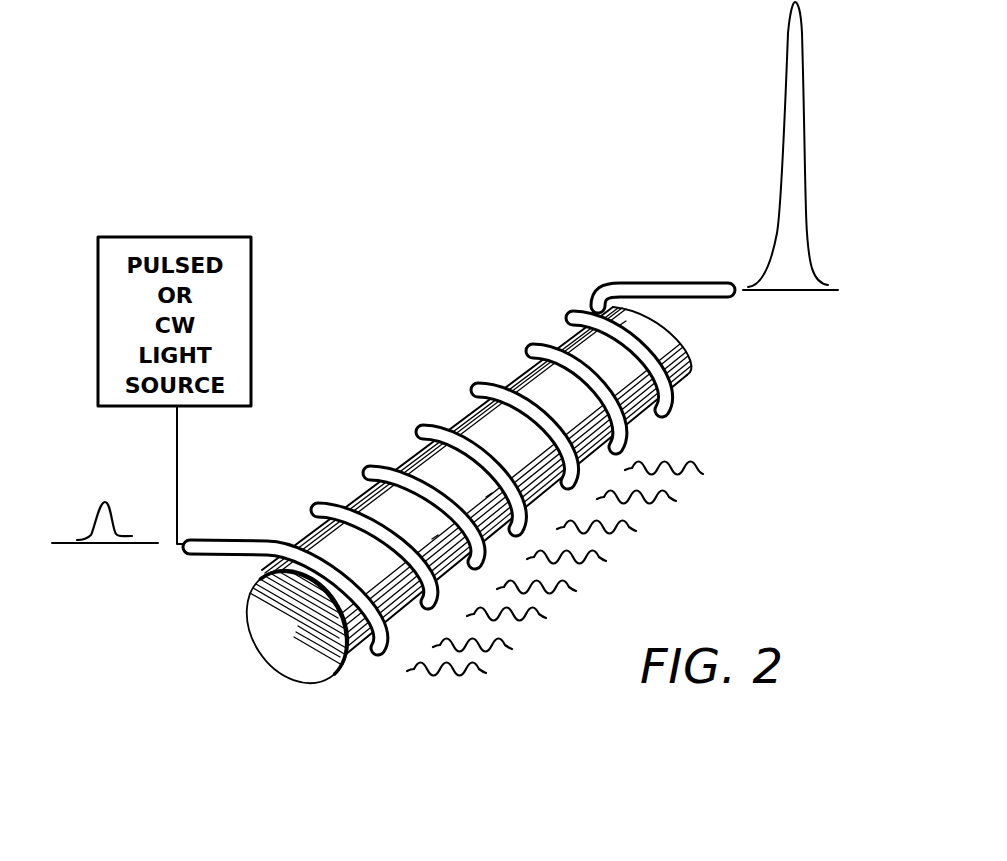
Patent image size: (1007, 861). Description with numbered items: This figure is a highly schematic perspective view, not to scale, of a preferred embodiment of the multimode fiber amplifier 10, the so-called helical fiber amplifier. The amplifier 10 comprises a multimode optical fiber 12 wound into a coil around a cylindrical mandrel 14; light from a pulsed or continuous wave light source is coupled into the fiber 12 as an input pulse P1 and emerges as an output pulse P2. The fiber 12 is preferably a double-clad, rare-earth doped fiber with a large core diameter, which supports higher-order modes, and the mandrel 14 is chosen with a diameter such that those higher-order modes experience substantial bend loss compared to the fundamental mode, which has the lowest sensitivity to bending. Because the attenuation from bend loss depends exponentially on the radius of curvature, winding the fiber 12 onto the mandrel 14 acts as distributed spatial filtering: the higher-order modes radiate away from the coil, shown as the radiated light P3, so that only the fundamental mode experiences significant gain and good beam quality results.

The multimode fiber amplifier 10 is at (459, 496).
The multimode optical fiber 12 is at (431, 420).
The cylindrical mandrel 14 is at (362, 652).
The input pulse P1 is at (97, 524).
The output pulse P2 is at (787, 48).
The radiated light P3 is at (703, 474).